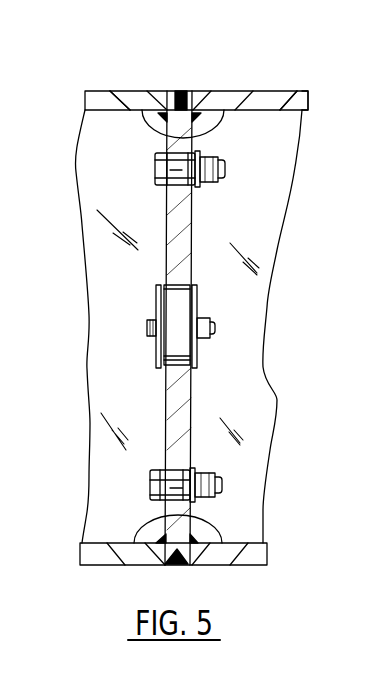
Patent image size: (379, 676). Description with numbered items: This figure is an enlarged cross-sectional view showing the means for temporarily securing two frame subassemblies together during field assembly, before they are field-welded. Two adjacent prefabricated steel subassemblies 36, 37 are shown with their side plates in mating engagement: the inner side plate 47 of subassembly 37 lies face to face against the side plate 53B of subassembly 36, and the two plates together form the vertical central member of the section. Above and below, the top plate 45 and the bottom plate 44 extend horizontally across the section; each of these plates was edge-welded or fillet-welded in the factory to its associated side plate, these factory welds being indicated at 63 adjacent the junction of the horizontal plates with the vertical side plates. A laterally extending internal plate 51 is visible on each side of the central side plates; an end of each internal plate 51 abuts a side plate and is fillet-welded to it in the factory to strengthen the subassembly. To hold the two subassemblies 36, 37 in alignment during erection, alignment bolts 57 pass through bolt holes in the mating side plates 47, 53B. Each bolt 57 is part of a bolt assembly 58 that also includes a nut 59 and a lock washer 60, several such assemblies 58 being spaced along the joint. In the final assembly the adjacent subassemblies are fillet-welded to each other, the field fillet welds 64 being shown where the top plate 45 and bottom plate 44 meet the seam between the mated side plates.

The subassembly 36 is at (103, 80).
The subassembly 37 is at (290, 80).
The top plate 45 is at (142, 90).
The fillet weld 64 is at (183, 90).
The factory weld 63 is at (168, 120).
The inner side plate 47 is at (190, 391).
The alignment bolt 57 is at (157, 160).
The bolt assembly 58 is at (176, 318).
The nut 59 is at (210, 160).
The lock washer 60 is at (194, 165).
The laterally extending internal plate 51 is at (123, 277).
The side plate 53B is at (165, 390).
The bottom plate 44 is at (112, 567).